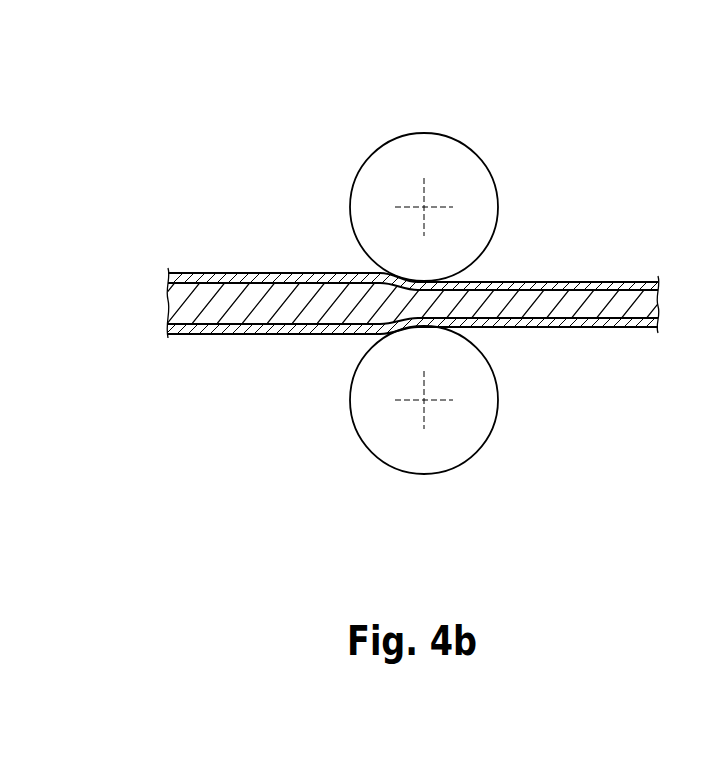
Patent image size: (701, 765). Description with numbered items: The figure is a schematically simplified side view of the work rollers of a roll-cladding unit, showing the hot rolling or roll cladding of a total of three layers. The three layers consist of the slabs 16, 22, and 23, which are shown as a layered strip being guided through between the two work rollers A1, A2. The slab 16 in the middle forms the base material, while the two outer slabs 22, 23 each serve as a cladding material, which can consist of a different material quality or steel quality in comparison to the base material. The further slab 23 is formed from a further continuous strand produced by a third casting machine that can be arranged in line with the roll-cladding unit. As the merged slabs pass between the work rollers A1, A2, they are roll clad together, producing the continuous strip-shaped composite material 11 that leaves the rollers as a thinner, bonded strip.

The continuous strip-shaped composite material 11 is at (375, 275).
The slab 16 is at (375, 275).
The slab 22 is at (232, 300).
The further slab 23 is at (232, 300).
The work roller A1 is at (478, 418).
The work roller A2 is at (470, 180).